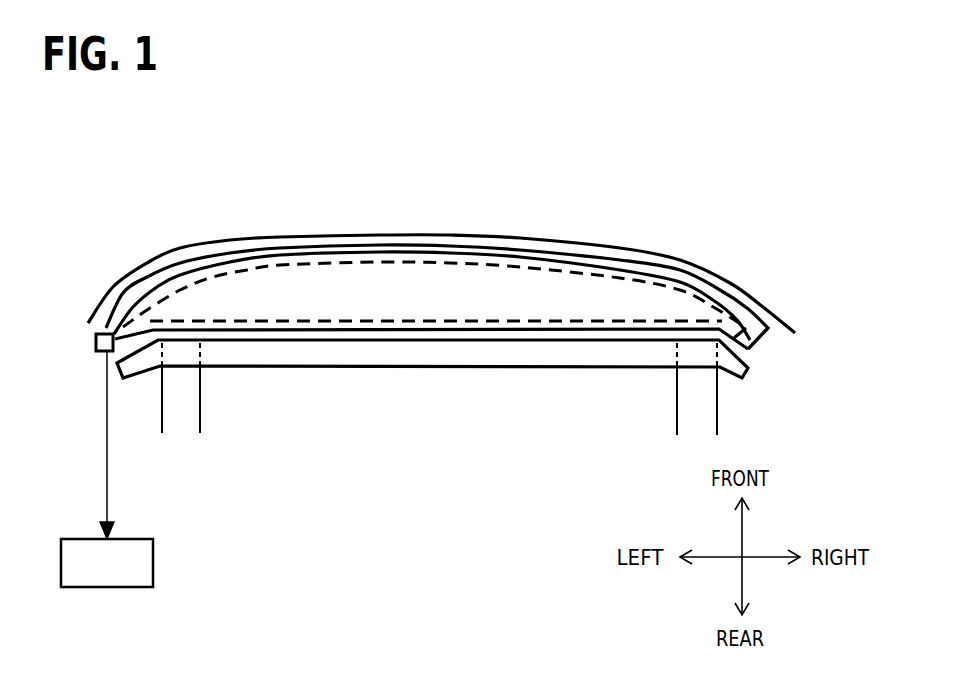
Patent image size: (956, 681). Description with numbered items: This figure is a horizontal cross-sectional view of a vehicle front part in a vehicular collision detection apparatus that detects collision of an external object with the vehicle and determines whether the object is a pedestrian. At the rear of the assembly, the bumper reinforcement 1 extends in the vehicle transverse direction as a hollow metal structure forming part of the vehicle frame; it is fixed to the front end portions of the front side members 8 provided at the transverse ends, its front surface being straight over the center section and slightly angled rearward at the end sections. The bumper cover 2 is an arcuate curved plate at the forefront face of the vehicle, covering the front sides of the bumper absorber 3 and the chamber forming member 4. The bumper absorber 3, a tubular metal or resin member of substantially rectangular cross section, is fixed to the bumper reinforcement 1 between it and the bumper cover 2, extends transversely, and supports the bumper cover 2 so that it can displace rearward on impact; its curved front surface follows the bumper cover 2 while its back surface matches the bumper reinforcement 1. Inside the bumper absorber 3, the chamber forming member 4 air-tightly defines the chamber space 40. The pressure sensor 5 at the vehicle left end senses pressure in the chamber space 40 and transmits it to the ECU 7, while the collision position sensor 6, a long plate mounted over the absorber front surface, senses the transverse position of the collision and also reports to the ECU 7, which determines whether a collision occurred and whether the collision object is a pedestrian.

The bumper reinforcement 1 is at (393, 355).
The bumper cover 2 is at (620, 247).
The bumper absorber 3 is at (176, 287).
The chamber forming member 4 is at (390, 265).
The chamber space 40 is at (463, 283).
The pressure sensor 5 is at (96, 342).
The collision position sensor 6 is at (717, 262).
The electronic control unit (ECU) 7 is at (147, 538).
The front side members 8 is at (187, 418).